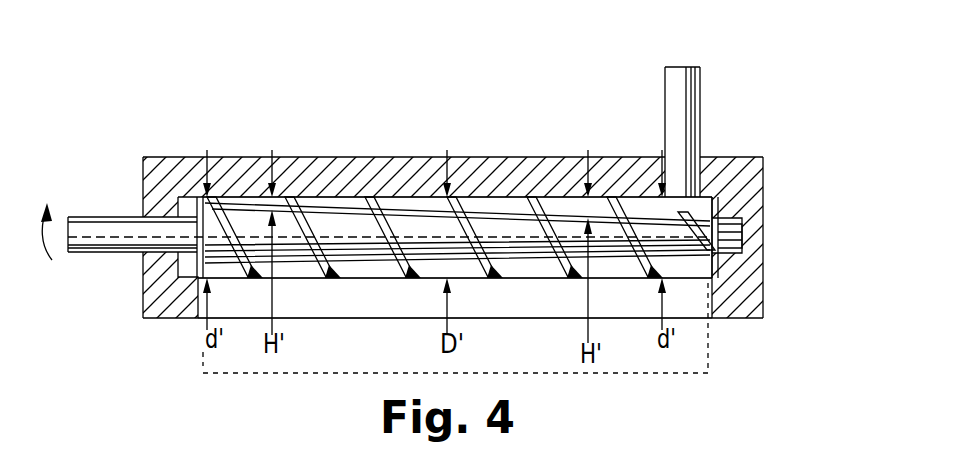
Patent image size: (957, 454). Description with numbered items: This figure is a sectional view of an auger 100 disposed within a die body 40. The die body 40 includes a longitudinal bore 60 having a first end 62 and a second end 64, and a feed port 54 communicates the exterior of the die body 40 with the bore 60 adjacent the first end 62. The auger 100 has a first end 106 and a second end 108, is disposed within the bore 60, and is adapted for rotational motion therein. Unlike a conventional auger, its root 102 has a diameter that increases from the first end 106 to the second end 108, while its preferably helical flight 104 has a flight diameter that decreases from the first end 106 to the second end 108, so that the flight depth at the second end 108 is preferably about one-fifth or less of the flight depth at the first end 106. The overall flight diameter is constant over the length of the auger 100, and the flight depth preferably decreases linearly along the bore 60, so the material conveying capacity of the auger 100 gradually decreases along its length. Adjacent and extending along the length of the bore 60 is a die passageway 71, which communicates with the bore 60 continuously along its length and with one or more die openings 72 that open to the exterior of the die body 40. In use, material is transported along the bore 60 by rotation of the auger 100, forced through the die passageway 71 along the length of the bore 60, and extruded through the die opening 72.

The die body 40 is at (620, 150).
The feed port 54 is at (677, 93).
The bore 60 is at (485, 201).
The first end of bore 62 is at (705, 196).
The second end of bore 64 is at (216, 279).
The die passageway 71 is at (501, 298).
The die opening 72 is at (360, 318).
The auger 100 is at (411, 188).
The root 102 is at (327, 228).
The flight 104 is at (541, 197).
The first end of auger 106 is at (703, 233).
The second end of auger 108 is at (250, 212).